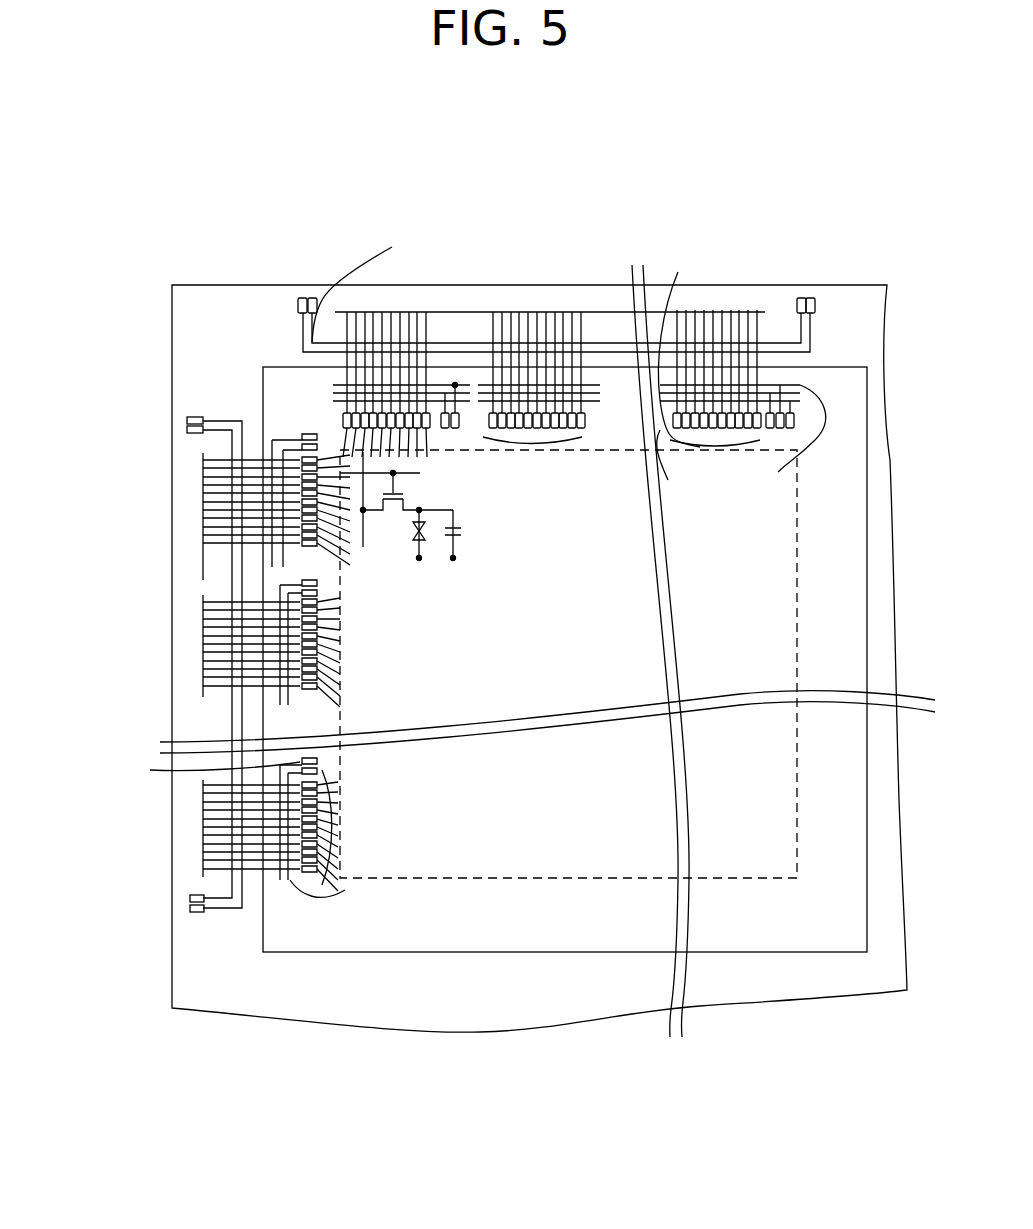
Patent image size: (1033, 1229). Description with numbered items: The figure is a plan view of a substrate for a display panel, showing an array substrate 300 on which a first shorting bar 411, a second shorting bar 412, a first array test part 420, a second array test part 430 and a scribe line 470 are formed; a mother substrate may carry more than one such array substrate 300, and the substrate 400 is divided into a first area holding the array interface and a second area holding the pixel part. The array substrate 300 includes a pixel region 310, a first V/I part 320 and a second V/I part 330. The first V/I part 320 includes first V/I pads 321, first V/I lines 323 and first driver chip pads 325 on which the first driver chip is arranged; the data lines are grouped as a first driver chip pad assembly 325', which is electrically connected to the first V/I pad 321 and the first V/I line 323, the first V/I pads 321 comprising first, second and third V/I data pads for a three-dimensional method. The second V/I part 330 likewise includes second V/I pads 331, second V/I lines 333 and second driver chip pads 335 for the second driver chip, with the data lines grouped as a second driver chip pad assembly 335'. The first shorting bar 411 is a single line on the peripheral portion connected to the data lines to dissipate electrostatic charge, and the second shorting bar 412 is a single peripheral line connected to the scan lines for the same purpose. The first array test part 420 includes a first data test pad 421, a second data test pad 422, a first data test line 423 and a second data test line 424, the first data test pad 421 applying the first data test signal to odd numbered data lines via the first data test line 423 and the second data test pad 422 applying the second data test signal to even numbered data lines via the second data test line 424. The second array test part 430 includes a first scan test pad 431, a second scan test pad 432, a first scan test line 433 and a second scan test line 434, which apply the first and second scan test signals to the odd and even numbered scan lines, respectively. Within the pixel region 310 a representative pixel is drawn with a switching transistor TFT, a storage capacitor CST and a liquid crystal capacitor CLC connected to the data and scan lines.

The array substrate 300 is at (576, 932).
The pixel region 310 is at (723, 851).
The first V/I part 320 is at (579, 437).
The first V/I pads 321 is at (765, 447).
The first V/I lines 323 is at (798, 452).
The first driver chip pads 325 is at (674, 474).
The first driver chip pad assembly 325' is at (683, 348).
The second V/I part 330 is at (390, 670).
The second V/I pads 331 is at (320, 768).
The second V/I lines 333 is at (272, 888).
The second driver chip pads 335 is at (386, 833).
The second driver chip pad assembly 335' is at (197, 770).
The substrate 400 is at (807, 971).
The first shorting bar 411 is at (470, 310).
The second shorting bar 412 is at (200, 582).
The first array test part 420 is at (518, 260).
The first data test pad 421 is at (302, 298).
The second data test pad 422 is at (312, 298).
The first data test line 423 is at (302, 343).
The second data test line 424 is at (368, 280).
The second array test part 430 is at (142, 642).
The first scan test pad 431 is at (210, 431).
The second scan test pad 432 is at (187, 421).
The first scan test line 433 is at (213, 432).
The second scan test line 434 is at (224, 420).
The scribe line 470 is at (848, 955).
The thin film transistor TFT is at (418, 502).
The storage capacitor CST is at (474, 532).
The liquid crystal capacitor CLC is at (410, 543).